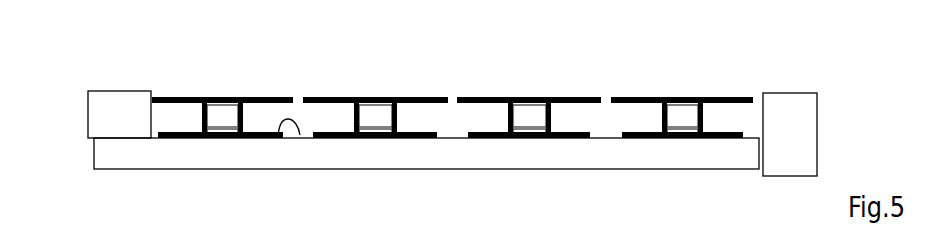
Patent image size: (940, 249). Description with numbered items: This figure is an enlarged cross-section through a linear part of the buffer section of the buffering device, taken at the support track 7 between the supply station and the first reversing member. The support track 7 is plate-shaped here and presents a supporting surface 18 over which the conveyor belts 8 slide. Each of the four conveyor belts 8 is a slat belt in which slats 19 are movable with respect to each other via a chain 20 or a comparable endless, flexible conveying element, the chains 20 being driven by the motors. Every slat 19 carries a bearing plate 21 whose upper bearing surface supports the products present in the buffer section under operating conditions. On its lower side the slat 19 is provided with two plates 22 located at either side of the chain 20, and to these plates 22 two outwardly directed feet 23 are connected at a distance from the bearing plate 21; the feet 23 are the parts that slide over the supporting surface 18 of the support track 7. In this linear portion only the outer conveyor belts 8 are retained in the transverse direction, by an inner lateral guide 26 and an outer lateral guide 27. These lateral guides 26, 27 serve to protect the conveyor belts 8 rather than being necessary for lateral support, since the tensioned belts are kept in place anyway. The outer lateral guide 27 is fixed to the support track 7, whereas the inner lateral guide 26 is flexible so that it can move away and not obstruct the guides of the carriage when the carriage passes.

The support track 7 is at (210, 157).
The conveyor belt 8 is at (654, 98).
The supporting surface 18 is at (278, 138).
The slat 19 is at (725, 103).
The chain 20 is at (525, 118).
The bearing plate 21 is at (628, 97).
The plate 22 is at (662, 113).
The foot 23 is at (467, 139).
The inner lateral guide 26 is at (788, 102).
The outer lateral guide 27 is at (112, 102).